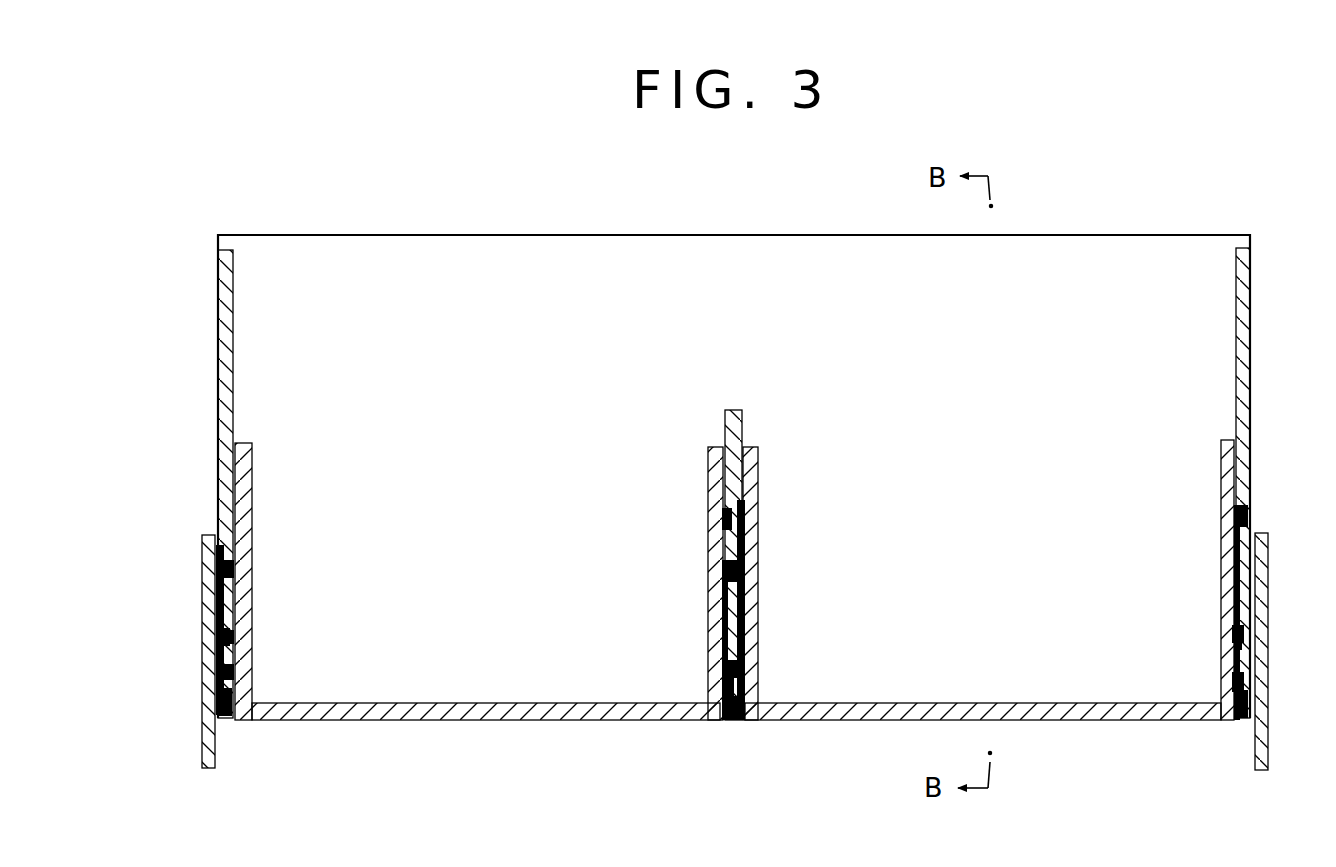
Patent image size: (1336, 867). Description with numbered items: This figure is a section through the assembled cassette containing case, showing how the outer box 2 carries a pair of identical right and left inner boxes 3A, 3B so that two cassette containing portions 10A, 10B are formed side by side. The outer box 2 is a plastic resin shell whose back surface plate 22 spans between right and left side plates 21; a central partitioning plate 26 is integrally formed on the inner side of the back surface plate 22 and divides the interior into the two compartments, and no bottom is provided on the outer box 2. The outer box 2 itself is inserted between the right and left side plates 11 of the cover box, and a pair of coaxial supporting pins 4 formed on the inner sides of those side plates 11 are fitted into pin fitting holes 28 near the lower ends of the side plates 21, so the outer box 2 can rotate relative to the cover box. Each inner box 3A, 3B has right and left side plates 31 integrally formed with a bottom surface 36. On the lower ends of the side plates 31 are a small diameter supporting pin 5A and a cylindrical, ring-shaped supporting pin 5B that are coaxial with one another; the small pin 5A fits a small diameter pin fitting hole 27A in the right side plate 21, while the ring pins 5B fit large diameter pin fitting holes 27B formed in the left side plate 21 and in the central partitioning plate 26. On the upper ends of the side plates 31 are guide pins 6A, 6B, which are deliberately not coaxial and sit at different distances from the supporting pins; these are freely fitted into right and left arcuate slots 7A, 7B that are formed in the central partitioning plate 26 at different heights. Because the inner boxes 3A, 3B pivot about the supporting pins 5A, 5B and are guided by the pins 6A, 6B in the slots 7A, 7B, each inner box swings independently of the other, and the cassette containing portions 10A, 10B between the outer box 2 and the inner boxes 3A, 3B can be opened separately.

The outer box 2 is at (822, 233).
The back surface plate 22 is at (655, 260).
The right and left side plates 21 is at (226, 318).
The right and left side plates 31 is at (248, 460).
The central partitioning plate 26 is at (733, 410).
The bottom surface 36 is at (538, 718).
The right and left side plates 11 is at (220, 752).
The arcuate slot 7B is at (222, 574).
The guide pin 6B is at (232, 574).
The guide pin 6A is at (728, 520).
The arcuate slot 7A is at (742, 520).
The pin fitting holes 28 is at (224, 637).
The supporting pins 4 is at (236, 632).
The cylindrical supporting pin 5B is at (234, 672).
The small diameter supporting pin 5A is at (726, 685).
The large diameter pin fitting holes 27B is at (226, 700).
The small diameter pin fitting hole 27A is at (1246, 690).
The cassette containing portion 10B is at (486, 440).
The cassette containing portion 10A is at (992, 440).
The inner box 3B is at (459, 724).
The inner box 3A is at (1045, 724).